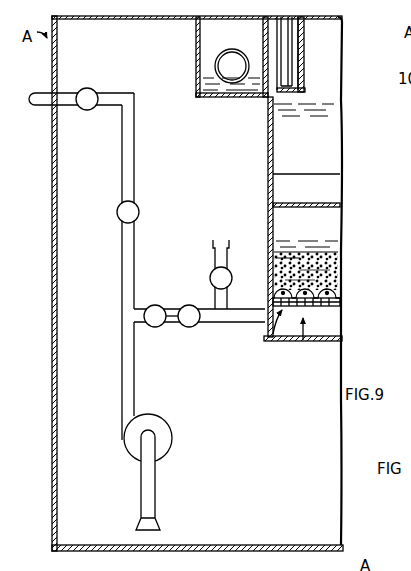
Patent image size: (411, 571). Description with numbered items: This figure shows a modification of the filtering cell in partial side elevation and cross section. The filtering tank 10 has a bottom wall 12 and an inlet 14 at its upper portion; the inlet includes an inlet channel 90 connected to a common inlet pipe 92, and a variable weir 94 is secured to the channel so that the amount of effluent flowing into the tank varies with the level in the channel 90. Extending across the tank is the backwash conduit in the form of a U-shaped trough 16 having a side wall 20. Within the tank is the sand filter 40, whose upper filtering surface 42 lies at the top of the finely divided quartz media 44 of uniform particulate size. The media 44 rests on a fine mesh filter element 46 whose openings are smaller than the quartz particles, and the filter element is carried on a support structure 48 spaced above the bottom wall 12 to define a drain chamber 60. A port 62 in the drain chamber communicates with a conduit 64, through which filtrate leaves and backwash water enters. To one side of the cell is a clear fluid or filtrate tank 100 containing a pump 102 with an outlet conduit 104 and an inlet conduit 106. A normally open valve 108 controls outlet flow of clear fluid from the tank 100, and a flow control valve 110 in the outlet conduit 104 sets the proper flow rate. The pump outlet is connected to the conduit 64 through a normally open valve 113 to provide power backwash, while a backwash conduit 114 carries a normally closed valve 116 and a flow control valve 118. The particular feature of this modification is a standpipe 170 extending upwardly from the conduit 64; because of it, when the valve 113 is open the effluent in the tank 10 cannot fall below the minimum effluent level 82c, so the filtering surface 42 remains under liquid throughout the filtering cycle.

The filtrate tank 100 is at (70, 48).
The filtering tank 10 is at (343, 95).
The bottom wall 12 is at (345, 349).
The inlet 14 is at (298, 46).
The trough 16 is at (308, 172).
The side wall 20 is at (330, 187).
The sand filter 40 is at (324, 267).
The upper filtering surface 42 is at (324, 262).
The media 44 is at (328, 279).
The filter element 46 is at (332, 293).
The support structure 48 is at (322, 311).
The drain chamber 60 is at (306, 342).
The port 62 is at (281, 338).
The conduit 64 is at (241, 323).
The minimum effluent level 82c is at (328, 242).
The inlet channel 90 is at (196, 52).
The inlet pipe 92 is at (224, 50).
The variable weir 94 is at (292, 86).
The pump 102 is at (172, 437).
The outlet conduit 104 is at (135, 170).
The inlet conduit 106 is at (156, 497).
The normally open valve 108 is at (95, 80).
The flow control valve 110 is at (139, 212).
The normally open valve 113 is at (210, 282).
The backwash conduit 114 is at (171, 306).
The normally closed valve 116 is at (193, 330).
The flow control valve 118 is at (154, 330).
The standpipe 170 is at (213, 250).